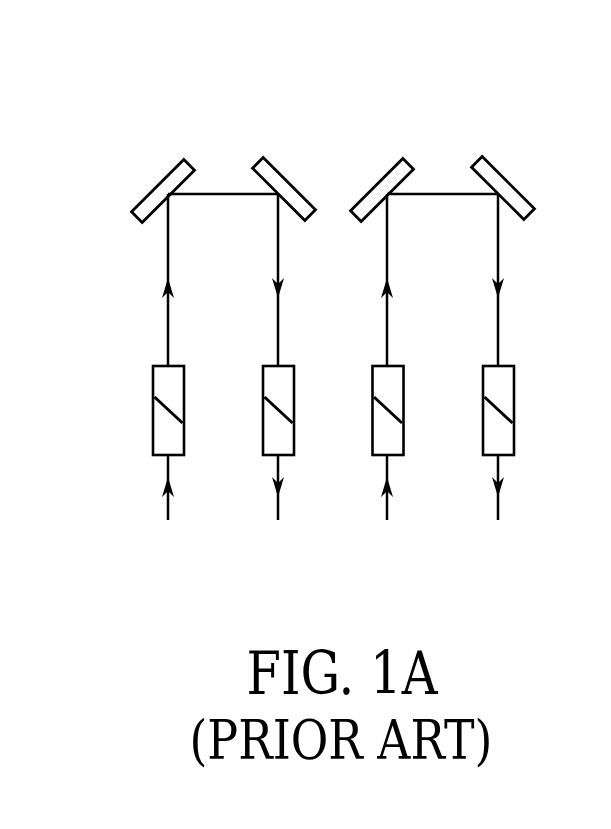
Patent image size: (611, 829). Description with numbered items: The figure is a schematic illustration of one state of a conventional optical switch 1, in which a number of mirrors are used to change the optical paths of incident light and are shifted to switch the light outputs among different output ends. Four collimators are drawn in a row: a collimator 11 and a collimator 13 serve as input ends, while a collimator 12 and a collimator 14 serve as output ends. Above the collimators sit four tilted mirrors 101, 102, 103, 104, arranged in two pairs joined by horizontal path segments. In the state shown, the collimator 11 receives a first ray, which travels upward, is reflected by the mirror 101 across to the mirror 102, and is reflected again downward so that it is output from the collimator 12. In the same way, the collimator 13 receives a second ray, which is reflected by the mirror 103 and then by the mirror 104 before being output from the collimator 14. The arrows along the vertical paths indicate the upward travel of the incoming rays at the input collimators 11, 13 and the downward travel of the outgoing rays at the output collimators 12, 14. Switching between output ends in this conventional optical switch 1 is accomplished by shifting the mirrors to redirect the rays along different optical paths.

The optical switch 1 is at (100, 115).
The collimator 11 is at (153, 424).
The collimator 12 is at (263, 424).
The collimator 13 is at (373, 424).
The collimator 14 is at (483, 424).
The mirror 101 is at (161, 173).
The mirror 102 is at (285, 172).
The mirror 103 is at (381, 172).
The mirror 104 is at (503, 171).